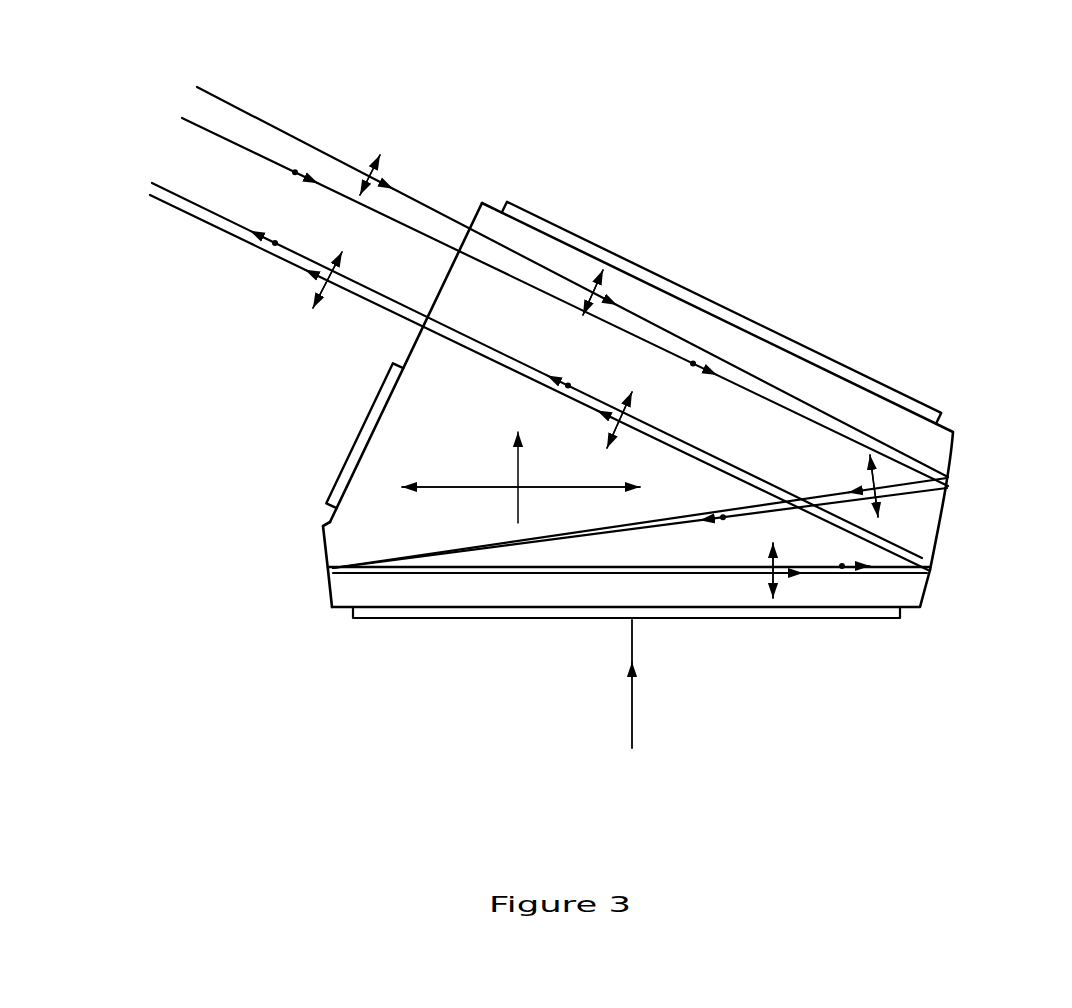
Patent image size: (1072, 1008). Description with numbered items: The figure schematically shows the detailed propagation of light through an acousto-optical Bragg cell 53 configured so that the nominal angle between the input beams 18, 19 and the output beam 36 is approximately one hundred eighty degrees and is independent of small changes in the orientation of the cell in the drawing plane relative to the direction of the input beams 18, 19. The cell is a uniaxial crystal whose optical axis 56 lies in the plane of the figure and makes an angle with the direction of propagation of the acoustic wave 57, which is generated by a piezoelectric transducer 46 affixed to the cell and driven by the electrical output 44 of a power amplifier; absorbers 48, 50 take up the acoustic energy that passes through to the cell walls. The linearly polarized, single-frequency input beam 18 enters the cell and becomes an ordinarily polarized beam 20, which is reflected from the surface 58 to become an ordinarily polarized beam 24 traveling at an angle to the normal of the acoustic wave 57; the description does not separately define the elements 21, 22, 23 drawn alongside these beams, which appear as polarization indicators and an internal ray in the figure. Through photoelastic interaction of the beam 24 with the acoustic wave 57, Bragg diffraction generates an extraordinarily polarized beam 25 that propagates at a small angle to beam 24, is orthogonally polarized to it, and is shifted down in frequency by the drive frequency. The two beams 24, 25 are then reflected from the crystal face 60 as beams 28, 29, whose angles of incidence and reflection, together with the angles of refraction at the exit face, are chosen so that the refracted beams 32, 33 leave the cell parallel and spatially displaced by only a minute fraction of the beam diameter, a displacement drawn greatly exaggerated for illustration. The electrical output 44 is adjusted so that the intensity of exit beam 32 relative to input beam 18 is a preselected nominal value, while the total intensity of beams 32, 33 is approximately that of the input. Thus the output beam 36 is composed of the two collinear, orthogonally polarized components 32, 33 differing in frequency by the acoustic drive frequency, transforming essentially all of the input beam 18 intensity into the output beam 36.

The input beam 18 is at (286, 167).
The input beam 19 is at (362, 166).
The ordinarily polarized beam 20 is at (705, 369).
The polarization direction of refracted beam 21 is at (588, 292).
The reflected beam 22 is at (733, 510).
The polarization direction of reflected beam 23 is at (882, 472).
The ordinarily polarized beam 24 is at (840, 575).
The extraordinarily polarized beam 25 is at (768, 600).
The reflected beam 28 is at (583, 390).
The reflected beam 29 is at (625, 423).
The exit beam 32 is at (282, 248).
The exit beam 33 is at (345, 288).
The output beam 36 is at (516, 368).
The electrical output 44 is at (648, 703).
The piezoelectric transducer 46 is at (401, 620).
The absorber 48 is at (857, 371).
The absorber 50 is at (376, 399).
The acousto-optical Bragg cell 53 is at (366, 428).
The optical axis 56 is at (450, 486).
The acoustic wave 57 is at (953, 460).
The surface 58 is at (326, 553).
The crystal face 60 is at (930, 578).